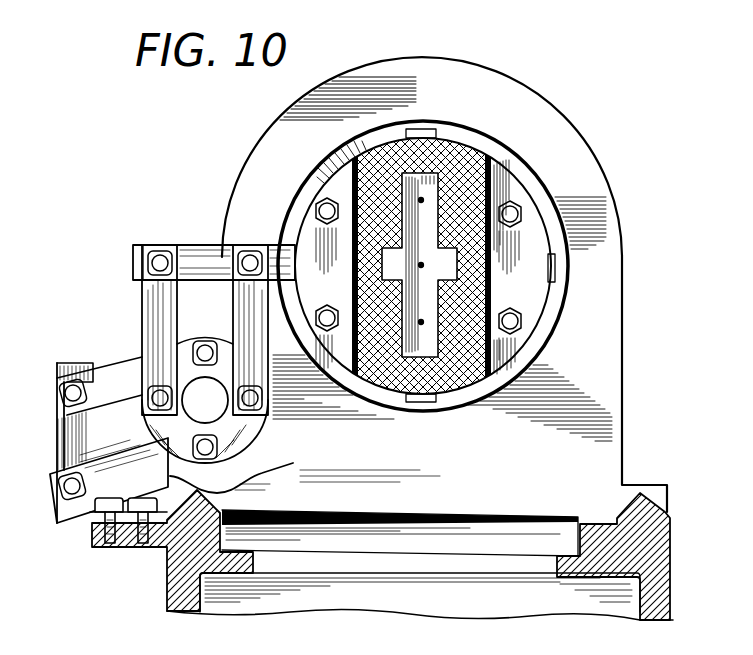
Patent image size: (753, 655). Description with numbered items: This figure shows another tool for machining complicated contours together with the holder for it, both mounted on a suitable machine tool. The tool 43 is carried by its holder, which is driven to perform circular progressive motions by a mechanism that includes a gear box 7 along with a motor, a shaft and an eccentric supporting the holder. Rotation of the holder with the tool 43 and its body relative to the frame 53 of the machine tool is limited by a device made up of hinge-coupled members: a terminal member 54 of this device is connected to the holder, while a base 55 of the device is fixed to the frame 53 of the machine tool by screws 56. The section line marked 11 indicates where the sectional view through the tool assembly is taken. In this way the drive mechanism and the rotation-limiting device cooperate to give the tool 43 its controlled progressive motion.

The gear box 7 is at (155, 330).
The section line 11- 11 is at (418, 113).
The tool 43 is at (340, 180).
The frame 53 is at (157, 550).
The terminal member 54 is at (210, 262).
The base 55 is at (72, 527).
The screws 56 is at (305, 467).